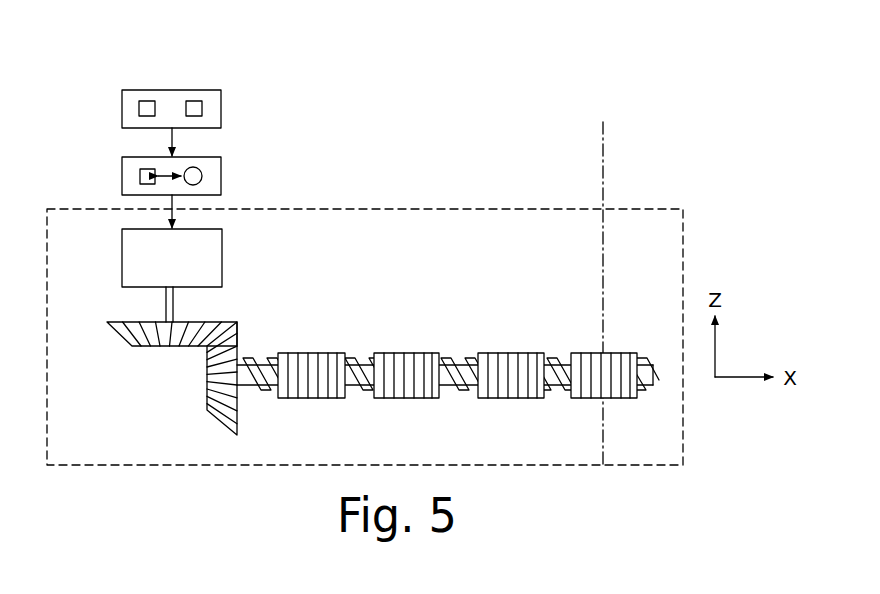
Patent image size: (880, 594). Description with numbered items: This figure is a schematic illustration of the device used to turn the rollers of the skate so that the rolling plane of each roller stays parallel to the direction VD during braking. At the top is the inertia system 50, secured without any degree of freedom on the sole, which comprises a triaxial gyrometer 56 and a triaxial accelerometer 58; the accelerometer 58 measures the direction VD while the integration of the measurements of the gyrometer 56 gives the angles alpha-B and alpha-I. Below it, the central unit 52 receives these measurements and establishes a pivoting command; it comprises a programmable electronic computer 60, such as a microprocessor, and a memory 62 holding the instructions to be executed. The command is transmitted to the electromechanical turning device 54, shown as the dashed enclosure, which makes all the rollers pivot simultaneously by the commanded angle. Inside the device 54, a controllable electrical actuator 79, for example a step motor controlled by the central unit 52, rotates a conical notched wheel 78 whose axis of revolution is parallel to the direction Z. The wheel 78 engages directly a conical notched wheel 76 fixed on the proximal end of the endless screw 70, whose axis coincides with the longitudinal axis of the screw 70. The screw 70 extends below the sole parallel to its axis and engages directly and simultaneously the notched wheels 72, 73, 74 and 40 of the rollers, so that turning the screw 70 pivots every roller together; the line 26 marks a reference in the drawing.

The reference plane / axis line 26 is at (603, 170).
The notched wheel 40 is at (606, 368).
The inertia system 50 is at (113, 100).
The central unit 52 is at (113, 187).
The electromechanical turning device 54 is at (335, 200).
The triaxial gyrometer 56 is at (147, 100).
The triaxial accelerometer 58 is at (192, 100).
The programmable electronic computer 60 is at (140, 176).
The memory 62 is at (200, 169).
The endless screw 70 is at (662, 377).
The notched wheel 72 is at (510, 368).
The notched wheel 73 is at (407, 370).
The notched wheel 74 is at (312, 370).
The conical notched wheel 76 is at (220, 380).
The conical notched wheel 78 is at (147, 332).
The controllable electrical actuator 79 is at (231, 243).